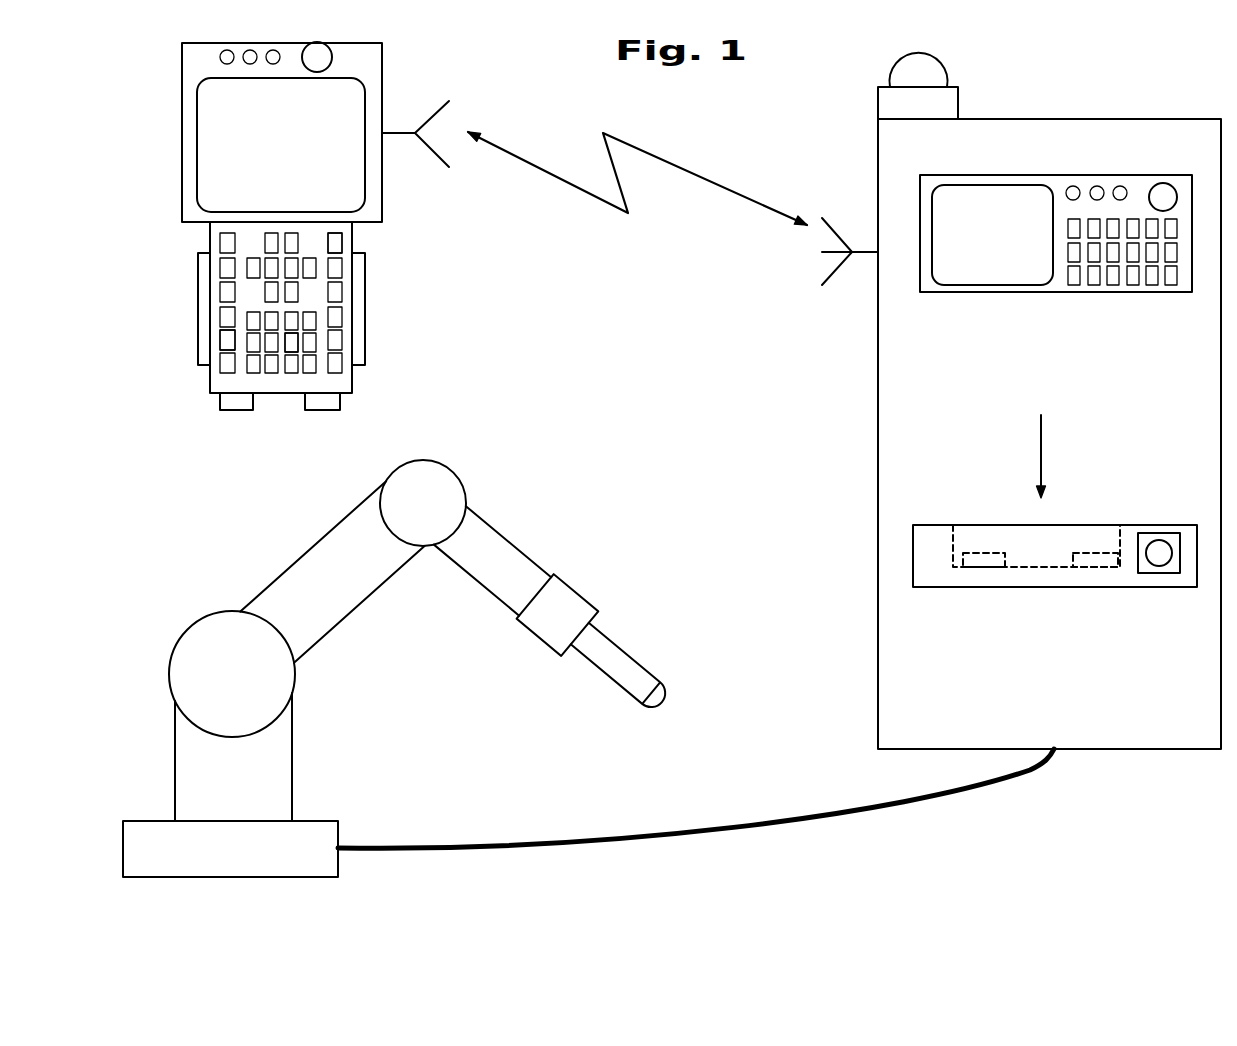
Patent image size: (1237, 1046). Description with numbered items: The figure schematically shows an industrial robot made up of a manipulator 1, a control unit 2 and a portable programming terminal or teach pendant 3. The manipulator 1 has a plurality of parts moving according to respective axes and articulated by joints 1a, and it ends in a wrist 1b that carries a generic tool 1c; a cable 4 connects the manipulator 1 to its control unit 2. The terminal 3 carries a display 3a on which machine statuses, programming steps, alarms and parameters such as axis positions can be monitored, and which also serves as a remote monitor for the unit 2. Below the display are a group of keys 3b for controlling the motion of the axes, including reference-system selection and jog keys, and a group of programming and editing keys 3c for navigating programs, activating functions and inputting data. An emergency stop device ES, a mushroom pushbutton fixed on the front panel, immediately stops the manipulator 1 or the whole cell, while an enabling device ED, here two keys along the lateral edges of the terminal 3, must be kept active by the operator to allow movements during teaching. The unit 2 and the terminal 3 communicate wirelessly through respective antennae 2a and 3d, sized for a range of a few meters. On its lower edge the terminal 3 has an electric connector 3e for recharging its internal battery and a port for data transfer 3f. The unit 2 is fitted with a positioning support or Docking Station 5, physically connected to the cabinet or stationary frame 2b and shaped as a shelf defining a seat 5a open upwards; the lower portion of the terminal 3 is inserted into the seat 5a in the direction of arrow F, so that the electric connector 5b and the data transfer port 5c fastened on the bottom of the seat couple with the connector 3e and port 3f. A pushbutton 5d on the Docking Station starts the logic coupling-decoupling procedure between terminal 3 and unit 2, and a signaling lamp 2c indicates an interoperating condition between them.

The manipulator 1 is at (408, 668).
The joints 1a is at (227, 646).
The end wrist 1b is at (570, 610).
The generic tool 1c is at (623, 668).
The control unit 2 is at (956, 390).
The antenna 2a is at (867, 243).
The cabinet or stationary frame 2b is at (878, 355).
The signaling lamp 2c is at (937, 78).
The portable programming terminal or teach pendant 3 is at (322, 259).
The display 3a is at (228, 166).
The keys for controlling the motion of the axes 3b is at (267, 270).
The programming and editing keys 3c is at (227, 340).
The antenna 3d is at (402, 142).
The electric connector 3e is at (322, 409).
The port for data transfer 3f is at (238, 408).
The cable 4 is at (690, 830).
The positioning support (Docking Station) 5 is at (1055, 557).
The seat 5a is at (958, 537).
The electric connector 5b is at (1098, 558).
The connector or port for data transfer 5c is at (980, 560).
The pushbutton 5d is at (1160, 550).
The emergency stop device ES is at (322, 62).
The enabling device ED is at (203, 333).
The arrow F is at (1044, 441).